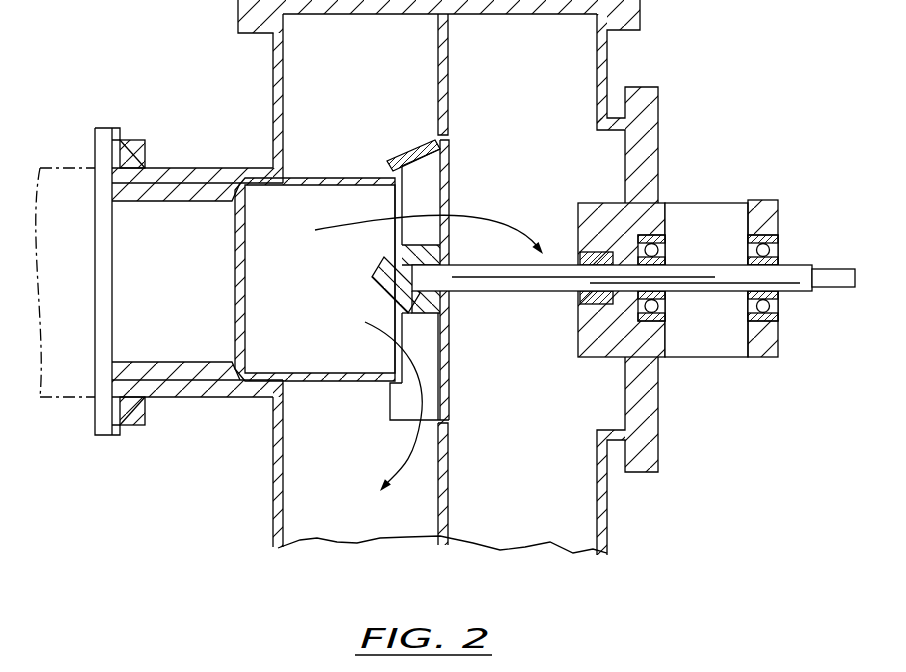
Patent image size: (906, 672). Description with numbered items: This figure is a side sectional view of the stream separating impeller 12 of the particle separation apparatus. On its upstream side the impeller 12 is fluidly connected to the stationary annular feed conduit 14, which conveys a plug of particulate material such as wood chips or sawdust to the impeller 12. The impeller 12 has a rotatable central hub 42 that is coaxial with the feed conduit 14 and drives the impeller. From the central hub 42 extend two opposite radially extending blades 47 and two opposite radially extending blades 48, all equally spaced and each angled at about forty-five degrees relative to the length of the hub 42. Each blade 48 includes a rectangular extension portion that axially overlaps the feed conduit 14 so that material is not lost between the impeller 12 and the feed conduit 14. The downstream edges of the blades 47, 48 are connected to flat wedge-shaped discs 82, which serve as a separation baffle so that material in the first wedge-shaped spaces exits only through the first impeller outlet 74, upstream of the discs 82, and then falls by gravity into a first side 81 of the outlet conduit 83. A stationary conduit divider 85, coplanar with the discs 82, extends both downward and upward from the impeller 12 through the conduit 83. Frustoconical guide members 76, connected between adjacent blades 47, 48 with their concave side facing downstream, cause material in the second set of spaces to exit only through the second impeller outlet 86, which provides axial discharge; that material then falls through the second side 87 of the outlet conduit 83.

The stream separating impeller 12 is at (372, 95).
The annular feed conduit 14 is at (333, 382).
The rotatable central hub 42 is at (380, 275).
The radially extending blade 47 is at (450, 162).
The radially extending blade 48 is at (424, 333).
The first impeller outlet 74 is at (403, 419).
The frustoconical guide member 76 is at (418, 150).
The first side of outlet conduit 81 is at (349, 508).
The wedge-shaped disc 82 is at (445, 374).
The outlet conduit 83 is at (598, 536).
The stationary conduit divider 85 is at (437, 518).
The second impeller outlet 86 is at (443, 192).
The second side of outlet conduit 87 is at (532, 483).